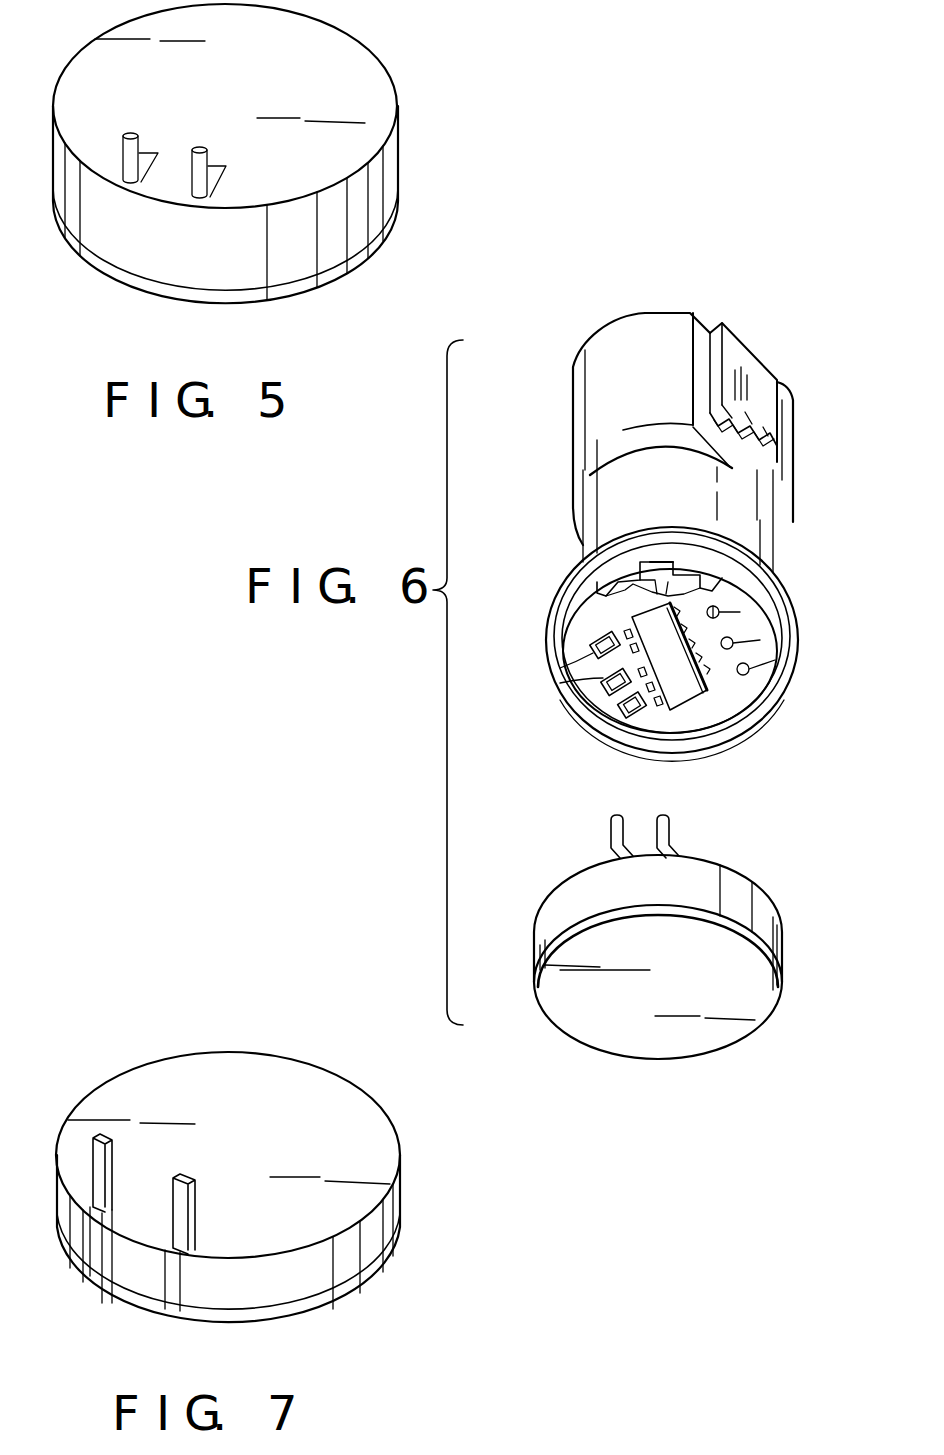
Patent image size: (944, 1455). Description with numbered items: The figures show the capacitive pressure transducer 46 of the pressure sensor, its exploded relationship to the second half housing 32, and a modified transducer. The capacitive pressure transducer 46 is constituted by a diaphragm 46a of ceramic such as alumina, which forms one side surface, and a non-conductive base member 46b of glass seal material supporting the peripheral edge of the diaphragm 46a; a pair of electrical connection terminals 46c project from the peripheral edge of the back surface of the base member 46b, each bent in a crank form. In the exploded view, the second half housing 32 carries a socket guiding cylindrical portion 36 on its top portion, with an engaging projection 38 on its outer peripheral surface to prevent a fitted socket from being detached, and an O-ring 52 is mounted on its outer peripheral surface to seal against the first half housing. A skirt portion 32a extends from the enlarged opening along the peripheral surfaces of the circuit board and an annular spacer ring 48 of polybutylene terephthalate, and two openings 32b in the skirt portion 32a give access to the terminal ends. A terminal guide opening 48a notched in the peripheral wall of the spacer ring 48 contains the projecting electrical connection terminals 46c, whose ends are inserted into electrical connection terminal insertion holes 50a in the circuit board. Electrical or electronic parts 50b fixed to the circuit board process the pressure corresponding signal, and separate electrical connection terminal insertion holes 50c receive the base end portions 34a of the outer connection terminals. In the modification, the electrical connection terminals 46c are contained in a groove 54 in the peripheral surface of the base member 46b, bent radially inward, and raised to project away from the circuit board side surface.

In FIG. 6, the second half housing 32 is at (789, 574).
In FIG. 6, the skirt portion 32a is at (758, 736).
In FIG. 6, the openings 32b is at (655, 580).
In FIG. 6, the base end portions 34a is at (716, 628).
In FIG. 6, the socket guiding cylindrical portion 36 is at (573, 394).
In FIG. 6, the engaging projection 38 is at (770, 395).
In FIG. 5, the capacitive pressure transducer 46 is at (408, 116).
In FIG. 6, the capacitive pressure transducer 46 is at (793, 939).
In FIG. 7, the capacitive pressure transducer 46 is at (412, 1222).
In FIG. 5, the diaphragm 46a is at (399, 222).
In FIG. 6, the diaphragm 46a is at (764, 997).
In FIG. 7, the diaphragm 46a is at (374, 1270).
In FIG. 5, the base member 46b is at (399, 162).
In FIG. 6, the base member 46b is at (735, 887).
In FIG. 7, the base member 46b is at (294, 1274).
In FIG. 5, the electrical connection terminals 46c is at (199, 147).
In FIG. 6, the electrical connection terminals 46c is at (669, 828).
In FIG. 7, the electrical connection terminals 46c is at (186, 1178).
In FIG. 6, the spacer ring 48 is at (760, 701).
In FIG. 6, the terminal guide opening 48a is at (628, 622).
In FIG. 6, the electrical connection terminal insertion holes 50a is at (714, 605).
In FIG. 6, the electrical or electronic parts 50b is at (620, 700).
In FIG. 6, the electrical connection terminal insertion holes 50c is at (750, 668).
In FIG. 6, the O-ring 52 is at (674, 560).
In FIG. 7, the groove 54 is at (160, 1253).